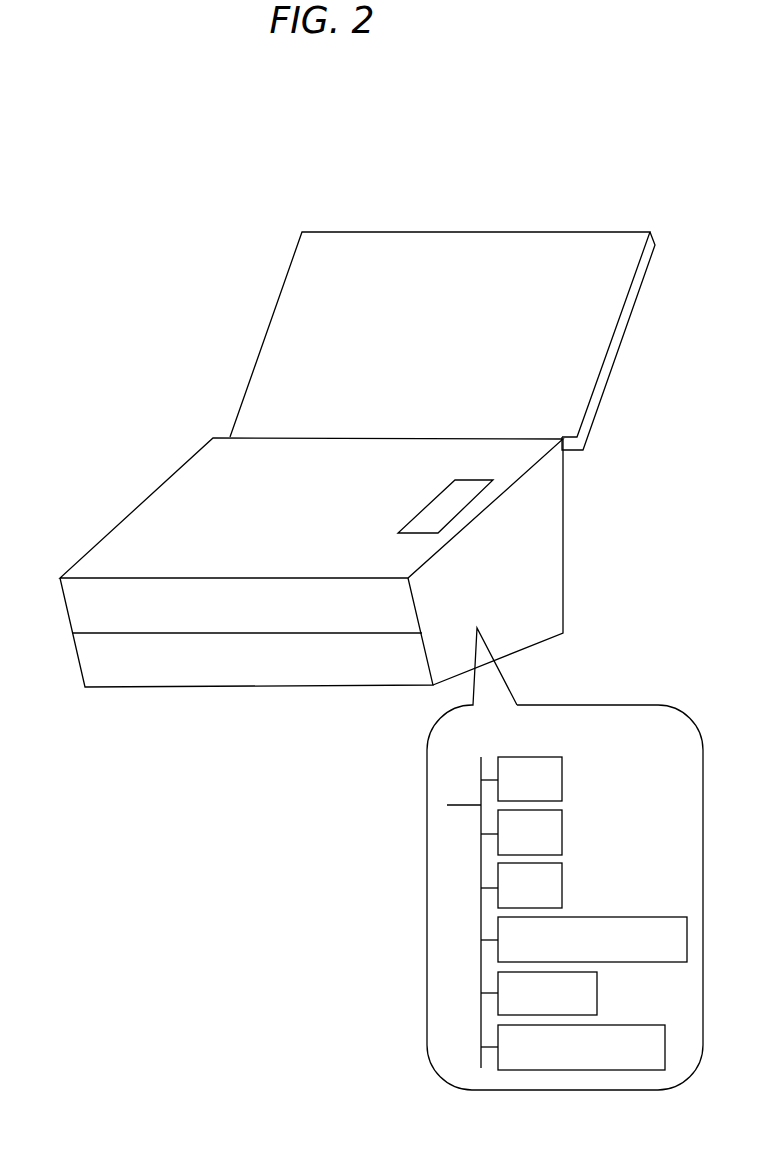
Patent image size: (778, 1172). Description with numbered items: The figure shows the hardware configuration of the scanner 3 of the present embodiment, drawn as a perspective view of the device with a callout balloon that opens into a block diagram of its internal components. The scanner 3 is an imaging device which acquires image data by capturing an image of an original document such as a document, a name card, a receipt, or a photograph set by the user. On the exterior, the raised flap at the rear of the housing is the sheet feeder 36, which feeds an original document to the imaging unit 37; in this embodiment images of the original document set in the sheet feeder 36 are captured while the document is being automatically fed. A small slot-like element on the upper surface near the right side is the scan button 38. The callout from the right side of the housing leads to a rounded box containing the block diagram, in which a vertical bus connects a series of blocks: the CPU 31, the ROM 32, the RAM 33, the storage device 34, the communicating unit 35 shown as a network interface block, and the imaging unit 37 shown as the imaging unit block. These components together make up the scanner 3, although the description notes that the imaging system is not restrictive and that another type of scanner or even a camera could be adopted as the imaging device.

The scanner 3 is at (133, 510).
The CPU 31 is at (562, 765).
The ROM 32 is at (562, 820).
The RAM 33 is at (562, 875).
The storage device 34 is at (593, 917).
The communicating unit 35 is at (597, 1005).
The sheet feeder 36 is at (358, 437).
The imaging unit 37 is at (630, 1025).
The scan button 38 is at (465, 508).